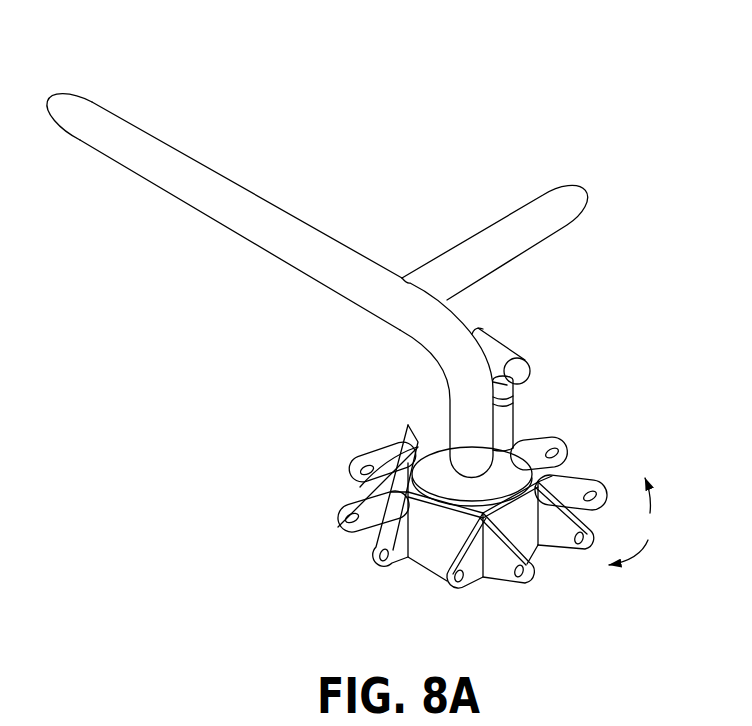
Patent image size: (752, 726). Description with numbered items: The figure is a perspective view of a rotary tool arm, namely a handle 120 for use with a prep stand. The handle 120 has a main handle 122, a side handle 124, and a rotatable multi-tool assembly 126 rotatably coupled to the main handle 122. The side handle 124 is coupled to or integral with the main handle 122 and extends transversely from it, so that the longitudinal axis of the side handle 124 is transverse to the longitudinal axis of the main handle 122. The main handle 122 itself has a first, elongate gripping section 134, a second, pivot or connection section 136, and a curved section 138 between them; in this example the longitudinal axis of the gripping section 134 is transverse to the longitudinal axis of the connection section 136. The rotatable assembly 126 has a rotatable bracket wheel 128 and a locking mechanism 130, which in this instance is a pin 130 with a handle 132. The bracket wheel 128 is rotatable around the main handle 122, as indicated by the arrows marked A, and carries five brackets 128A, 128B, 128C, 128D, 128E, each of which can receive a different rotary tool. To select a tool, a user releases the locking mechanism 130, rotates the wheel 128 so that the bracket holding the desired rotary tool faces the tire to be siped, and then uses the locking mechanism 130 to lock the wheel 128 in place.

The handle 120 is at (118, 62).
The main handle 122 is at (137, 157).
The side handle 124 is at (507, 238).
The rotatable multi-tool assembly 126 is at (255, 484).
The rotatable bracket wheel 128 is at (483, 586).
The bracket 128A is at (549, 555).
The bracket 128B is at (578, 470).
The bracket 128C is at (437, 420).
The bracket 128D is at (343, 490).
The bracket 128E is at (415, 574).
The locking mechanism 130 is at (515, 430).
The handle of pin 132 is at (502, 352).
The gripping section 134 is at (277, 158).
The connection section 136 is at (349, 523).
The curved section 138 is at (405, 350).